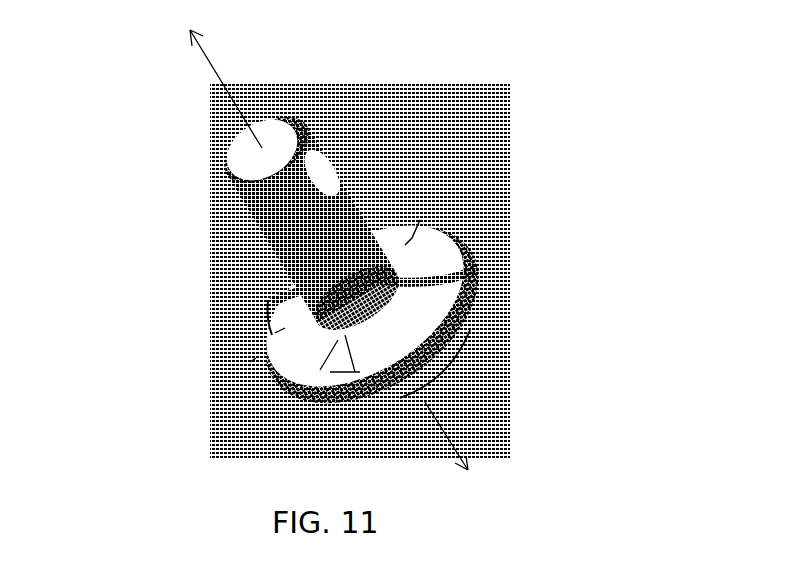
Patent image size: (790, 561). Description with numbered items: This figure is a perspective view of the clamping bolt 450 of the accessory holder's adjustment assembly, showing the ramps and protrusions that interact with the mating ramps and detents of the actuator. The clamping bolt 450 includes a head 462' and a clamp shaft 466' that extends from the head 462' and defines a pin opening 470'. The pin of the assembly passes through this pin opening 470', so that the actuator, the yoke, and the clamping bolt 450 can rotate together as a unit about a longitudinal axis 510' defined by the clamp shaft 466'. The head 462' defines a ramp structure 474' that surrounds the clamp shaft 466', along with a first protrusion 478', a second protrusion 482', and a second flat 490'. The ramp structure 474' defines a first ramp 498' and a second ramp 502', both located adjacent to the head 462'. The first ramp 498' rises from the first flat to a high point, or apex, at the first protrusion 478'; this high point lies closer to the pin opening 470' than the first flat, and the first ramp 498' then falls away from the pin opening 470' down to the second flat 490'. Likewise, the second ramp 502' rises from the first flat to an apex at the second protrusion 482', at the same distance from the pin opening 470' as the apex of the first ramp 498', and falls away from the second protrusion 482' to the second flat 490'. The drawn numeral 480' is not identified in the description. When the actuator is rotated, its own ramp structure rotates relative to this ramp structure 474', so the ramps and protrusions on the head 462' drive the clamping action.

The clamping bolt 450 is at (500, 201).
The head 462' is at (421, 314).
The clamp shaft 466' is at (343, 234).
The pin opening 470' is at (317, 125).
The ramp structure 474' is at (214, 394).
The first protrusion 478' is at (432, 265).
The top face mark 480' is at (434, 209).
The second protrusion 482' is at (201, 307).
The second flat 490' is at (307, 385).
The first ramp 498' is at (488, 373).
The second ramp 502' is at (285, 305).
The longitudinal axis 510' is at (329, 250).